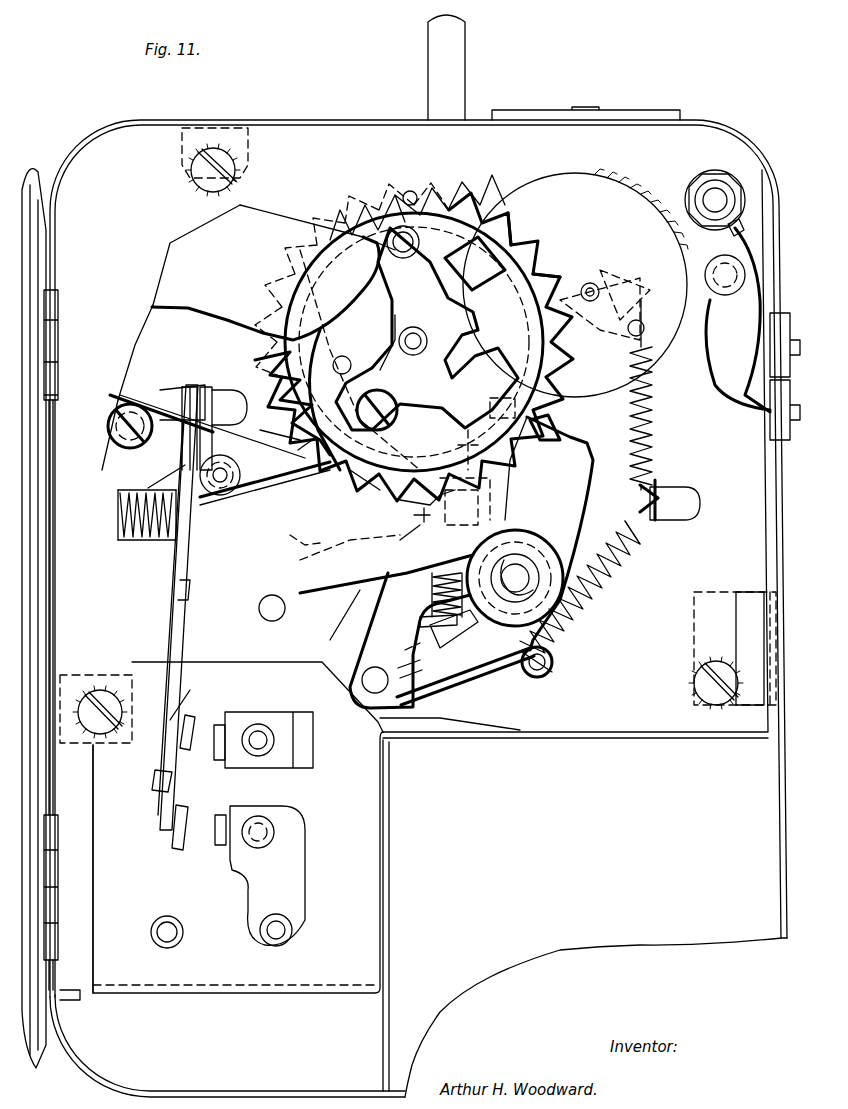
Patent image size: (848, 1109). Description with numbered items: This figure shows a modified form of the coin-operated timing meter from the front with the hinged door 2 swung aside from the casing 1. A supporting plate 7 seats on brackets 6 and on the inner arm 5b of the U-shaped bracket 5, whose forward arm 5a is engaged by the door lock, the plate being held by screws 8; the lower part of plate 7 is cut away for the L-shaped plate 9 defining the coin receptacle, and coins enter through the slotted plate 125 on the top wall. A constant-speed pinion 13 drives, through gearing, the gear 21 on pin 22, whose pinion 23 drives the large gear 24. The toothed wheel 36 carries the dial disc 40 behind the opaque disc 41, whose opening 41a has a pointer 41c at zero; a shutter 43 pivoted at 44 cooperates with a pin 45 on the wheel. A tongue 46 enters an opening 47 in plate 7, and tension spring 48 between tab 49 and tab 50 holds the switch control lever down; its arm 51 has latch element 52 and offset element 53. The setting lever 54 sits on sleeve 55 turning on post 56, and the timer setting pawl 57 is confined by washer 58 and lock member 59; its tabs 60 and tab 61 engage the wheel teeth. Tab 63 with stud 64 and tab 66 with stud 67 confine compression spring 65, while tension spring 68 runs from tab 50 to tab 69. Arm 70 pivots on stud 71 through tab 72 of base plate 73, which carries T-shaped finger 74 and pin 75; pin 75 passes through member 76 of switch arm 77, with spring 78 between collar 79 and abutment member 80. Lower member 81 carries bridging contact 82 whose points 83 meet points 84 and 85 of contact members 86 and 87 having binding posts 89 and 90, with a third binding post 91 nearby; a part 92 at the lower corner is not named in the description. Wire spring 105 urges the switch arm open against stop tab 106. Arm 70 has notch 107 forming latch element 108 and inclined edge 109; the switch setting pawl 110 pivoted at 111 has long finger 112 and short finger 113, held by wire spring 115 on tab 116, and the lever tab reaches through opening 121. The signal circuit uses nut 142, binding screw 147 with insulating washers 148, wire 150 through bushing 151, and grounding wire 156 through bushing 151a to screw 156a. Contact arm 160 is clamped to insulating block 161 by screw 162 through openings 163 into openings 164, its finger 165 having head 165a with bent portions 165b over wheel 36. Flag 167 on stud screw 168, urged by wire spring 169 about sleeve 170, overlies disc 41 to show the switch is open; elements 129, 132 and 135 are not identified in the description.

The casing 1 is at (170, 113).
The door 2 is at (44, 178).
The U-shaped bracket 5 is at (694, 625).
The forward arm 5a is at (748, 592).
The inner arm 5b is at (716, 592).
The brackets 6 is at (248, 143).
The supporting plate 7 is at (487, 740).
The screws 8 is at (198, 178).
The plate 9 is at (436, 742).
The pinion 13 is at (402, 152).
The gear 21 is at (628, 212).
The pin 22 is at (600, 309).
The pinion 23 is at (592, 282).
The gear 24 is at (250, 358).
The toothed wheel 36 is at (325, 212).
The dial disc 40 is at (500, 232).
The opaque disc 41 is at (560, 358).
The opening 41a is at (540, 262).
The pointer 41c is at (505, 225).
The shutter 43 is at (372, 205).
The pivot 44 is at (386, 240).
The pin 45 is at (402, 190).
The tongue 46 is at (620, 262).
The opening 47 is at (650, 273).
The tension spring 48 is at (652, 418).
The tab 49 is at (645, 335).
The tab 50 is at (690, 492).
The arm 51 is at (454, 450).
The latch element 52 is at (461, 513).
The forwardly offset element 53 is at (492, 407).
The setting lever 54 is at (448, 700).
The sleeve 55 is at (498, 548).
The post 56 is at (528, 560).
The timer setting pawl 57 is at (578, 493).
The washer 58 is at (520, 540).
The lock member 59 is at (540, 570).
The tabs 60 is at (548, 448).
The tab 61 is at (301, 535).
The tab 63 is at (402, 650).
The stud 64 is at (452, 630).
The compression coil spring 65 is at (465, 629).
The tab 66 is at (430, 598).
The stud 67 is at (423, 603).
The tension spring 68 is at (600, 598).
The tab 69 is at (537, 678).
The arm 70 is at (250, 505).
The stud 71 is at (200, 474).
The tab 72 is at (195, 455).
The base plate 73 is at (195, 406).
The T-shaped finger 74 is at (185, 416).
The pin 75 is at (118, 502).
The member 76 is at (180, 578).
The movable switch arm 77 is at (185, 603).
The compression coil spring 78 is at (140, 538).
The flanged collar 79 is at (157, 476).
The abutment member 80 is at (118, 522).
The lower member 81 is at (178, 700).
The bridging contact member 82 is at (155, 782).
The contact points 83 is at (180, 862).
The contact point 84 is at (211, 753).
The contact point 85 is at (216, 812).
The contact member 86 is at (288, 736).
The contact member 87 is at (290, 864).
The binding post 89 is at (262, 725).
The binding post 90 is at (292, 928).
The third binding post 91 is at (178, 942).
The stop 92 is at (80, 998).
The wire spring 105 is at (188, 545).
The tab 106 is at (198, 387).
The notch 107 is at (403, 542).
The latch element 108 is at (410, 495).
The inclined edge 109 is at (350, 547).
The switch setting pawl 110 is at (370, 625).
The pivot 111 is at (368, 690).
The long finger 112 is at (478, 498).
The short finger 113 is at (348, 615).
The wire spring 115 is at (452, 672).
The tab 116 is at (407, 672).
The opening 121 is at (546, 662).
The plate 125 is at (658, 118).
The hole 129 is at (268, 620).
The spring end 132 is at (620, 572).
The tube 135 is at (428, 62).
The nut 142 is at (400, 338).
The binding screw 147 is at (715, 188).
The insulating washers 148 is at (692, 186).
The wire 150 is at (738, 365).
The insulating bushing 151 is at (788, 313).
The bushing 151a is at (770, 430).
The wire 156 is at (735, 395).
The screw 156a is at (720, 260).
The resilient metal contact arm 160 is at (440, 380).
The insulating block 161 is at (370, 330).
The screw 162 is at (386, 432).
The openings 163 is at (352, 368).
The openings 164 is at (353, 360).
The finger 165 is at (293, 403).
The head 165a is at (300, 455).
The lateral portions 165b is at (310, 464).
The flag 167 is at (178, 270).
The stud screw 168 is at (108, 418).
The wire spring 169 is at (229, 407).
The sleeve 170 is at (104, 442).